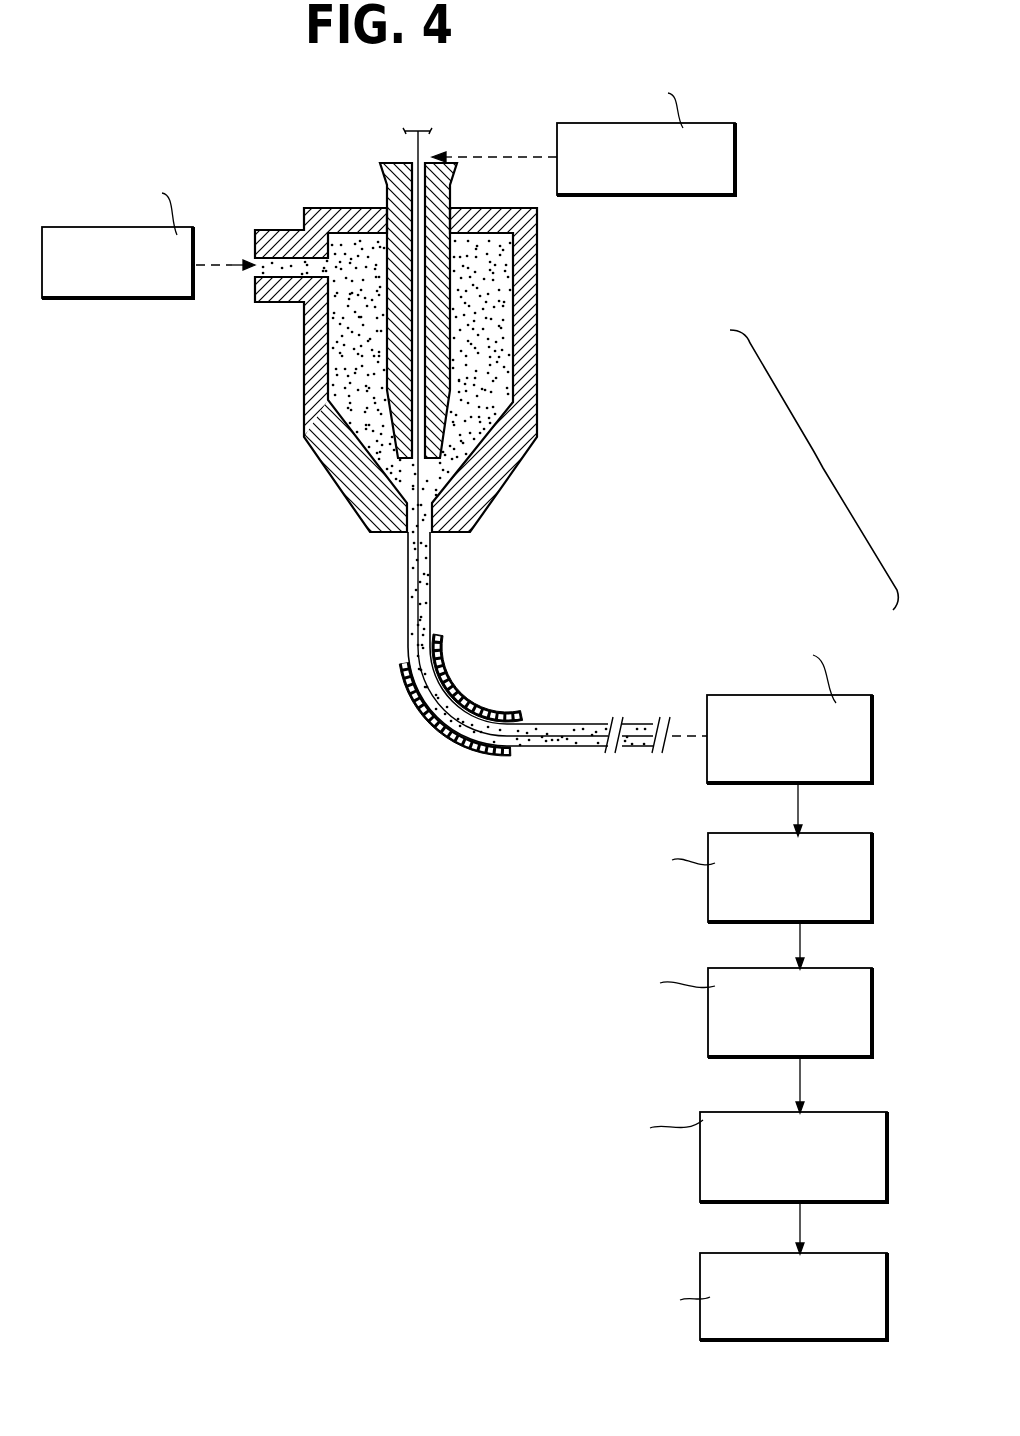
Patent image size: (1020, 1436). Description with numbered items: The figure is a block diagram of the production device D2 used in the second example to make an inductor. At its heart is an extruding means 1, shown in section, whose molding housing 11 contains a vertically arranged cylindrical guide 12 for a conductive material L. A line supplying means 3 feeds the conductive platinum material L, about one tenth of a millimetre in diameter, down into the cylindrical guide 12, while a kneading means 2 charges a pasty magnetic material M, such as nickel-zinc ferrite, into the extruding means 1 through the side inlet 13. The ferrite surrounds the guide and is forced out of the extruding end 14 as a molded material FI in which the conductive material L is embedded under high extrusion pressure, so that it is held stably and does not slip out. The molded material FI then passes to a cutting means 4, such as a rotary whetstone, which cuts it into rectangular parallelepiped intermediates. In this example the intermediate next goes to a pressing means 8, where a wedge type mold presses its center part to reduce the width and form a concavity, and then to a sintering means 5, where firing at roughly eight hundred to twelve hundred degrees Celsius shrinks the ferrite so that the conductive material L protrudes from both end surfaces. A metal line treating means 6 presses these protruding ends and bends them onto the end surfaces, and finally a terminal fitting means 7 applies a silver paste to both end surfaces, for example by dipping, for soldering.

The extruding means 1 is at (450, 441).
The kneading means 2 is at (109, 306).
The line supplying means 3 is at (735, 185).
The cutting means 4 is at (872, 772).
The sintering means 5 is at (872, 1047).
The metal line treating means 6 is at (890, 1148).
The terminal fitting means 7 is at (890, 1287).
The pressing means 8 is at (872, 910).
The molding housing 11 is at (513, 437).
The cylindrical guide 12 is at (397, 363).
The material inlet 13 is at (255, 303).
The extruding end 14 is at (407, 537).
The magnetic material M is at (353, 305).
The molded material FI is at (430, 588).
The conductive material L is at (417, 158).
The device D2 is at (815, 454).